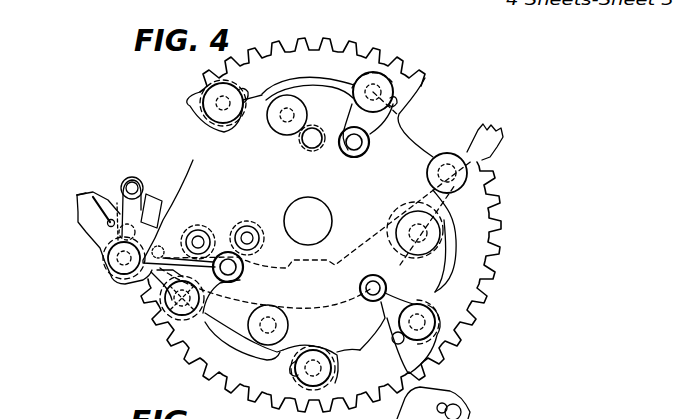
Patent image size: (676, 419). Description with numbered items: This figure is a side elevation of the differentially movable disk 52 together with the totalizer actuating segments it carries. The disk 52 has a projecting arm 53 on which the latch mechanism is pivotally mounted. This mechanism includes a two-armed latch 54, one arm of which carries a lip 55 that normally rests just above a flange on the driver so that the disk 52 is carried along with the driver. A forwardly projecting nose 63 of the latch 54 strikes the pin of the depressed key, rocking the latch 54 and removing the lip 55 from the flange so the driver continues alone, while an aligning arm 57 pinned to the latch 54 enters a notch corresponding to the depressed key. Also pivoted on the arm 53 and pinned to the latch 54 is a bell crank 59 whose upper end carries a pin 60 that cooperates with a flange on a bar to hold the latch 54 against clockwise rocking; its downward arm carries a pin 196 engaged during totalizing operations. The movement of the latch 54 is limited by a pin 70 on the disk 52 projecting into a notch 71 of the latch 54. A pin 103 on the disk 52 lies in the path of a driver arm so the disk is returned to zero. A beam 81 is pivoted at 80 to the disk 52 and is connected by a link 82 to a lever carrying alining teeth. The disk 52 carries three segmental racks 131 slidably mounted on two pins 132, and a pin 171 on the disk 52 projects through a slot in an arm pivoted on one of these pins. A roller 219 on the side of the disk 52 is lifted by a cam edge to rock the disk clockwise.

The segmental rack 131 is at (372, 62).
The differentially movable disk 52 is at (395, 133).
The beam 81 is at (297, 307).
The pins 132 is at (216, 110).
The pin 171 is at (283, 120).
The pin 103 is at (308, 140).
The link 82 is at (497, 143).
The pin 196 is at (207, 307).
The notch 71 is at (140, 277).
The pin 70 is at (160, 247).
The pivot 80 is at (198, 236).
The roller 219 is at (240, 230).
The latch 54 is at (90, 232).
The nose 63 is at (83, 202).
The aligning arm 57 is at (110, 200).
The bell crank 59 is at (142, 198).
The pin 60 is at (132, 182).
The lip 55 is at (170, 190).
The projecting arm 53 is at (110, 263).